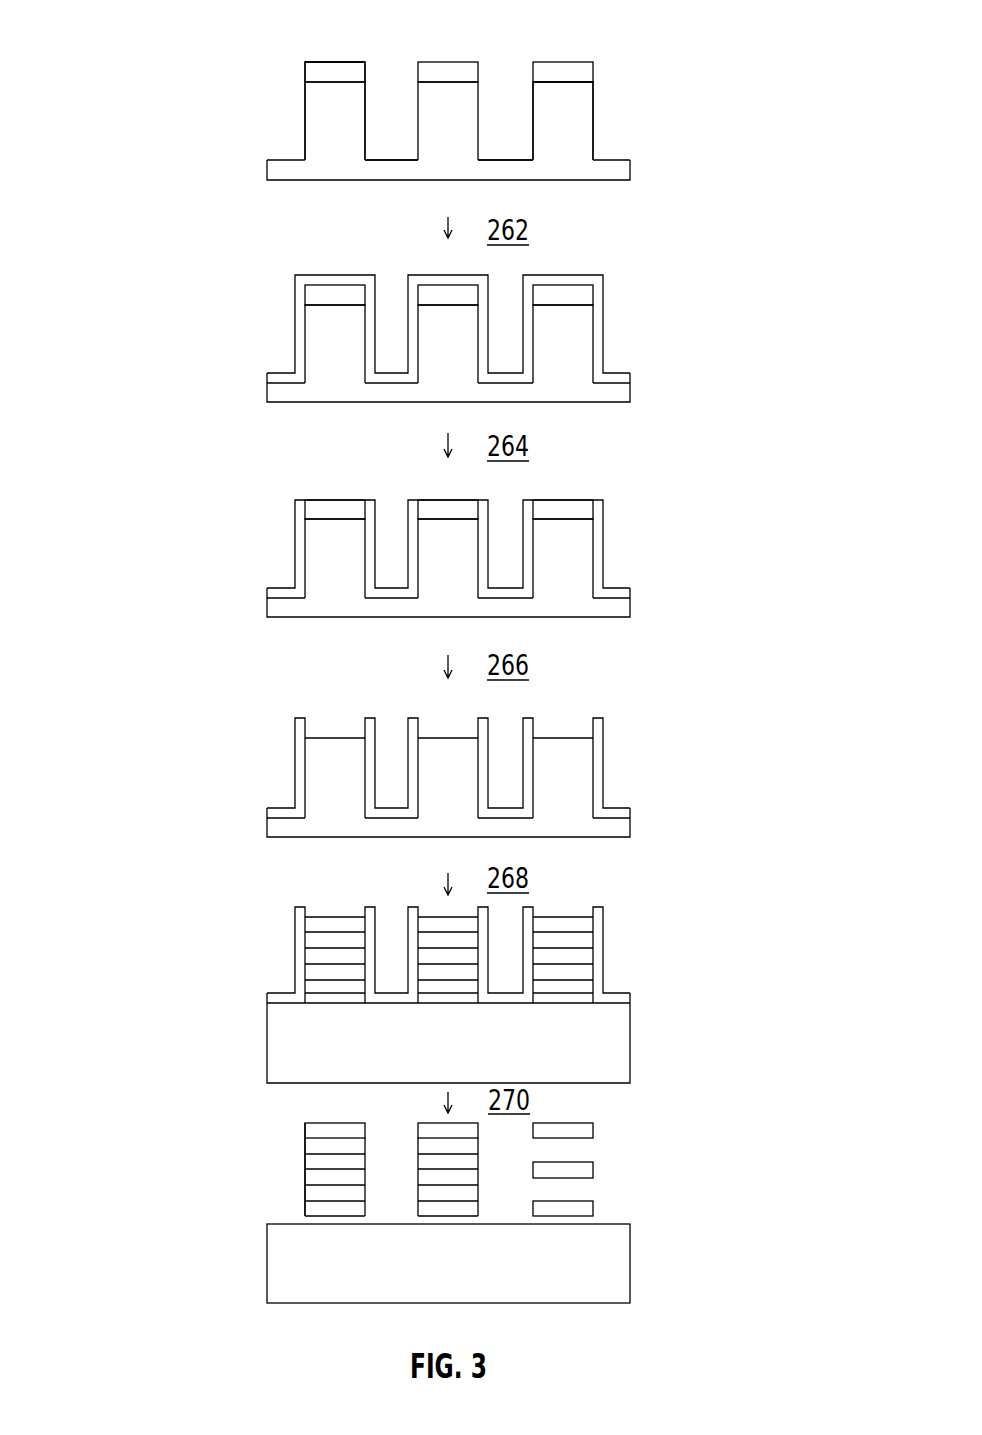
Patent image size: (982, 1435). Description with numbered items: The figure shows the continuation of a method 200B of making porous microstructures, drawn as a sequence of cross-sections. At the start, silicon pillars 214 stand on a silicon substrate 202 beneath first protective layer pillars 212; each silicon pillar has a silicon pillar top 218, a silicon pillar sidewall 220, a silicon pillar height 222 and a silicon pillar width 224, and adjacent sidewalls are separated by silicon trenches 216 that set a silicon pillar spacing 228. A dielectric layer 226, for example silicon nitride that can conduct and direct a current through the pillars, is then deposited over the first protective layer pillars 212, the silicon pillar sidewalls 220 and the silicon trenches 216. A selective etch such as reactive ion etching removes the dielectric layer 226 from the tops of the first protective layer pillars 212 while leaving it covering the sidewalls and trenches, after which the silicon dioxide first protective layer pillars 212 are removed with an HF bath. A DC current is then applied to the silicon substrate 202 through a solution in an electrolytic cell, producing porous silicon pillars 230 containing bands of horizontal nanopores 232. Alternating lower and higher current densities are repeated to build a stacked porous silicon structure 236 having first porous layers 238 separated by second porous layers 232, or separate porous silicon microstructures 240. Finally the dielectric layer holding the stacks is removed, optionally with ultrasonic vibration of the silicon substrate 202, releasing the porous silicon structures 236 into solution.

The method 200B is at (190, 75).
The silicon substrate 202 is at (632, 167).
The first protective layer pillars 212 is at (595, 72).
The silicon pillars 214 is at (638, 82).
The silicon trenches 216 is at (488, 157).
The silicon pillar top 218 is at (305, 82).
The silicon pillar sidewall 220 is at (305, 108).
The silicon pillar height 222 is at (218, 80).
The silicon pillar width 224 is at (365, 51).
The dielectric layer 226 is at (603, 333).
The silicon pillar spacing 228 is at (418, 51).
The porous silicon pillars 230 is at (565, 910).
The bands of horizontal nanopores 232 is at (593, 947).
The stacked porous silicon structure 236 is at (218, 1123).
The first porous layers 238 is at (303, 1130).
The separate porous silicon microstructures 240 is at (595, 1130).